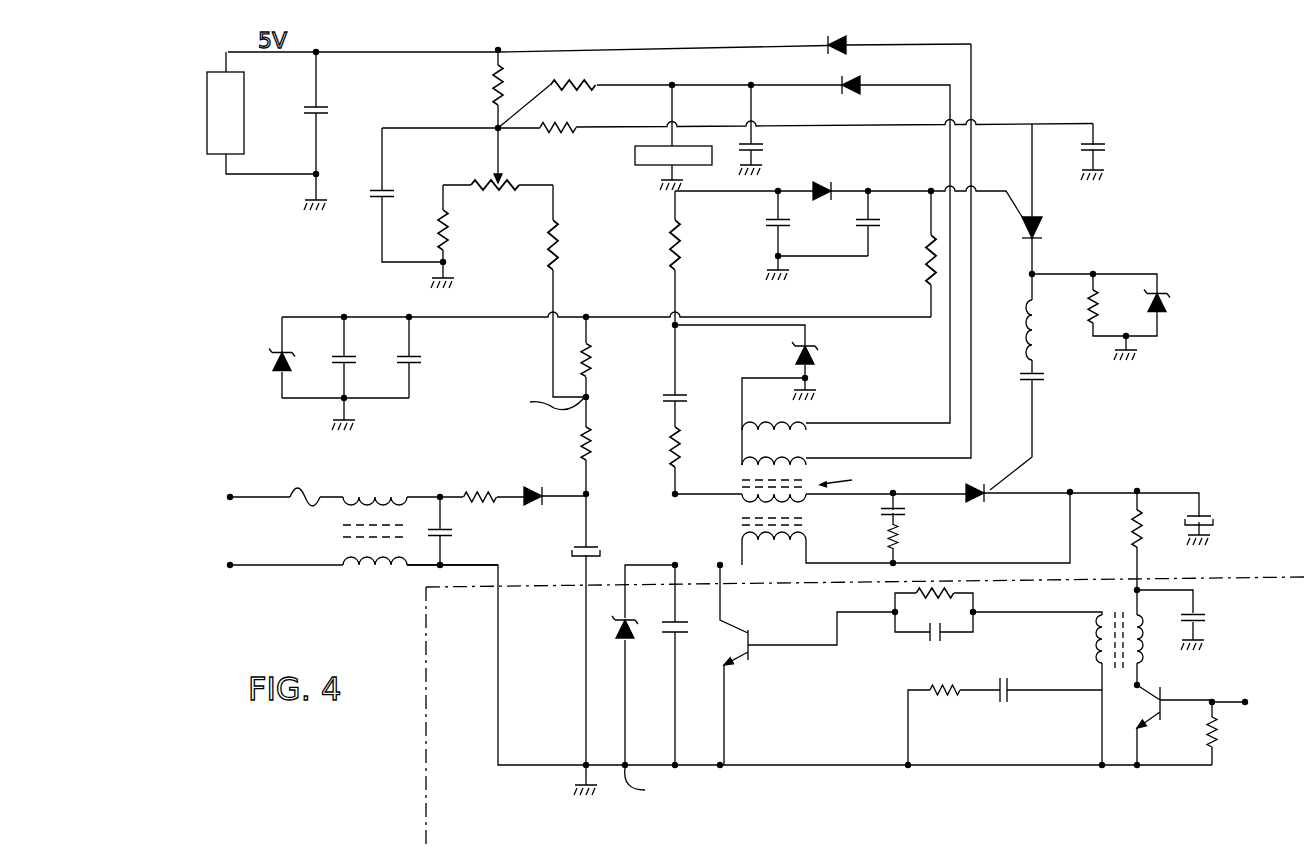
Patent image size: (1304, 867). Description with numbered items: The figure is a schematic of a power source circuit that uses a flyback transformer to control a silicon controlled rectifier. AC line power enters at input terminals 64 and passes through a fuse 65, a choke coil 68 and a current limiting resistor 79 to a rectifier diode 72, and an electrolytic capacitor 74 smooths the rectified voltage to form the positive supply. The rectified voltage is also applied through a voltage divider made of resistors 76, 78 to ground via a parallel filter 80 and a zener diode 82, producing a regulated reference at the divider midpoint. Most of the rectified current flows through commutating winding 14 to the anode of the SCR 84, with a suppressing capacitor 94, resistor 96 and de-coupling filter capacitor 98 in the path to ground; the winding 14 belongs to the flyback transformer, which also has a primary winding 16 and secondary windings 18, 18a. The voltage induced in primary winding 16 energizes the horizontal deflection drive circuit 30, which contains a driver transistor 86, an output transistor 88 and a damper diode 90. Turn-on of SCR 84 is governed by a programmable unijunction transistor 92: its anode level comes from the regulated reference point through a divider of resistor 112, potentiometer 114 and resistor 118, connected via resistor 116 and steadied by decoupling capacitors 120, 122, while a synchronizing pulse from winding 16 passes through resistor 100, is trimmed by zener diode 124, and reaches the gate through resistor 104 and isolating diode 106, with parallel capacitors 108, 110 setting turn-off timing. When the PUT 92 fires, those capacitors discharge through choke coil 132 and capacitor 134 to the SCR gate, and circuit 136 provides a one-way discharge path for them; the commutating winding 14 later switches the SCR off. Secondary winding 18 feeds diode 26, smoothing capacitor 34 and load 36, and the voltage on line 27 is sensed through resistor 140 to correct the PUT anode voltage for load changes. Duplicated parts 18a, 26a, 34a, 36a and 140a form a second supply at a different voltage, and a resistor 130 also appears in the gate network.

The line 27 is at (545, 48).
The diode 26 is at (846, 36).
The diode 26a is at (858, 80).
The resistor 140 is at (496, 90).
The resistor 140a is at (578, 78).
The resistor 116 is at (565, 122).
The load 36 is at (207, 120).
The capacitor 34 is at (325, 101).
The decoupling capacitor 120 is at (386, 190).
The potentiometer 114 is at (512, 183).
The resistor 118 is at (446, 238).
The resistor 112 is at (557, 242).
The load 36a is at (633, 156).
The capacitor 34a is at (758, 149).
The isolating diode 106 is at (824, 184).
The resistor 104 is at (677, 245).
The capacitor 108 is at (768, 226).
The capacitor 110 is at (884, 222).
The resistor 130 is at (928, 264).
The decoupling capacitor 122 is at (1106, 147).
The programmable unijunction transistor 92 is at (1043, 228).
The circuit 136 is at (1170, 297).
The choke coil 132 is at (1040, 328).
The capacitor 134 is at (1046, 378).
The parallel filter 80 is at (429, 368).
The zener diode 82 is at (274, 362).
The voltage divider resistor 76 is at (594, 358).
The voltage divider resistor 78 is at (594, 460).
The zener diode 124 is at (816, 354).
The secondary winding 18a is at (766, 424).
The secondary winding 18 is at (780, 462).
The commutating winding 14 is at (742, 505).
The primary winding 16 is at (781, 554).
The resistor 100 is at (680, 444).
The suppressing capacitor 94 is at (884, 510).
The resistor 96 is at (899, 540).
The silicon controlled rectifier 84 is at (980, 507).
The de-coupling filter capacitor 98 is at (1208, 516).
The input terminals 64 is at (240, 492).
The fuse 65 is at (318, 492).
The choke coil 68 is at (392, 494).
The current limiting resistor 79 is at (482, 492).
The rectifier diode 72 is at (533, 488).
The electrolytic capacitor 74 is at (572, 553).
The damper diode 90 is at (629, 648).
The output transistor 88 is at (744, 666).
The horizontal deflection drive circuit 30 is at (1030, 820).
The driver transistor 86 is at (1147, 705).